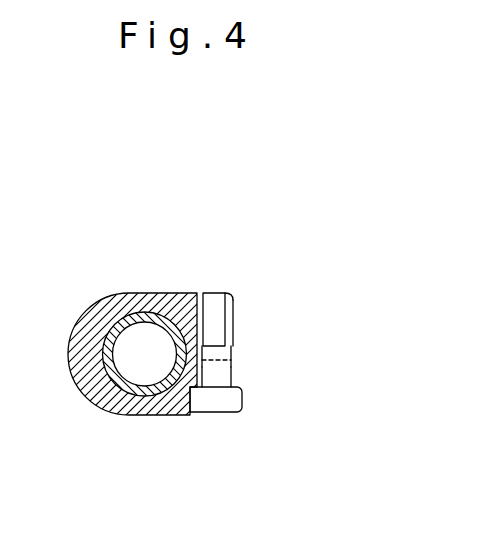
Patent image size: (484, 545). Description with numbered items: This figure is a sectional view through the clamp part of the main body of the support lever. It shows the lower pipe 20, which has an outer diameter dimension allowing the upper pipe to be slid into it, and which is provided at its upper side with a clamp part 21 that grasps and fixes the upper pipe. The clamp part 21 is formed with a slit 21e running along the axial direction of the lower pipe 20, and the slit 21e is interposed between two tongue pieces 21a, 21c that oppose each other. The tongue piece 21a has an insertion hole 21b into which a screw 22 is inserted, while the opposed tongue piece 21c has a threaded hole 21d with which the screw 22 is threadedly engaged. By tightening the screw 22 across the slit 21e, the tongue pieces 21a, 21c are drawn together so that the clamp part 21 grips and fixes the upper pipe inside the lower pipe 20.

The lower pipe 20 is at (102, 393).
The clamp part 21 is at (253, 345).
The tongue piece 21a is at (232, 369).
The insertion hole 21b is at (228, 368).
The tongue piece 21c is at (232, 327).
The threaded hole 21d is at (217, 294).
The slit 21e is at (232, 354).
The screw 22 is at (233, 400).